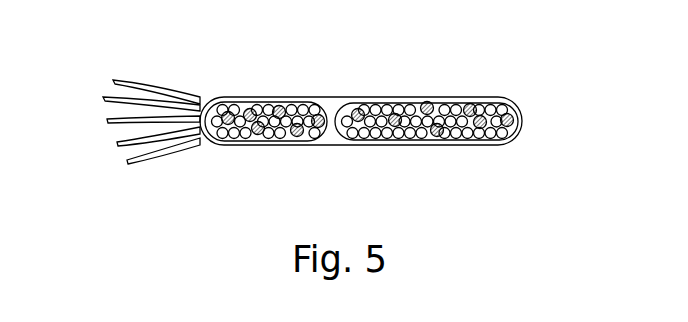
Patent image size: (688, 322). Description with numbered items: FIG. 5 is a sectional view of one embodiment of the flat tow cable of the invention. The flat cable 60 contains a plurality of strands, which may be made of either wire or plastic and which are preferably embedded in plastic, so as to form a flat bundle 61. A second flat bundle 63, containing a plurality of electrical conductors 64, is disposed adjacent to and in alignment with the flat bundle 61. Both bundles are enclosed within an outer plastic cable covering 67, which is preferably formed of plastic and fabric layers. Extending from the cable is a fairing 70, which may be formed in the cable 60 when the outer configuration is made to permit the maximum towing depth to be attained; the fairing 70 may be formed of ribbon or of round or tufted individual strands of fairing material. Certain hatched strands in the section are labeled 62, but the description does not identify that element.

The flat cable 60 is at (410, 93).
The flat bundle 61 is at (341, 141).
The conductive strands of second bundle 62 is at (503, 98).
The second flat bundle 63 is at (327, 96).
The electrical conductors 64 is at (248, 108).
The outer plastic cable covering 67 is at (398, 142).
The fairing 70 is at (104, 114).